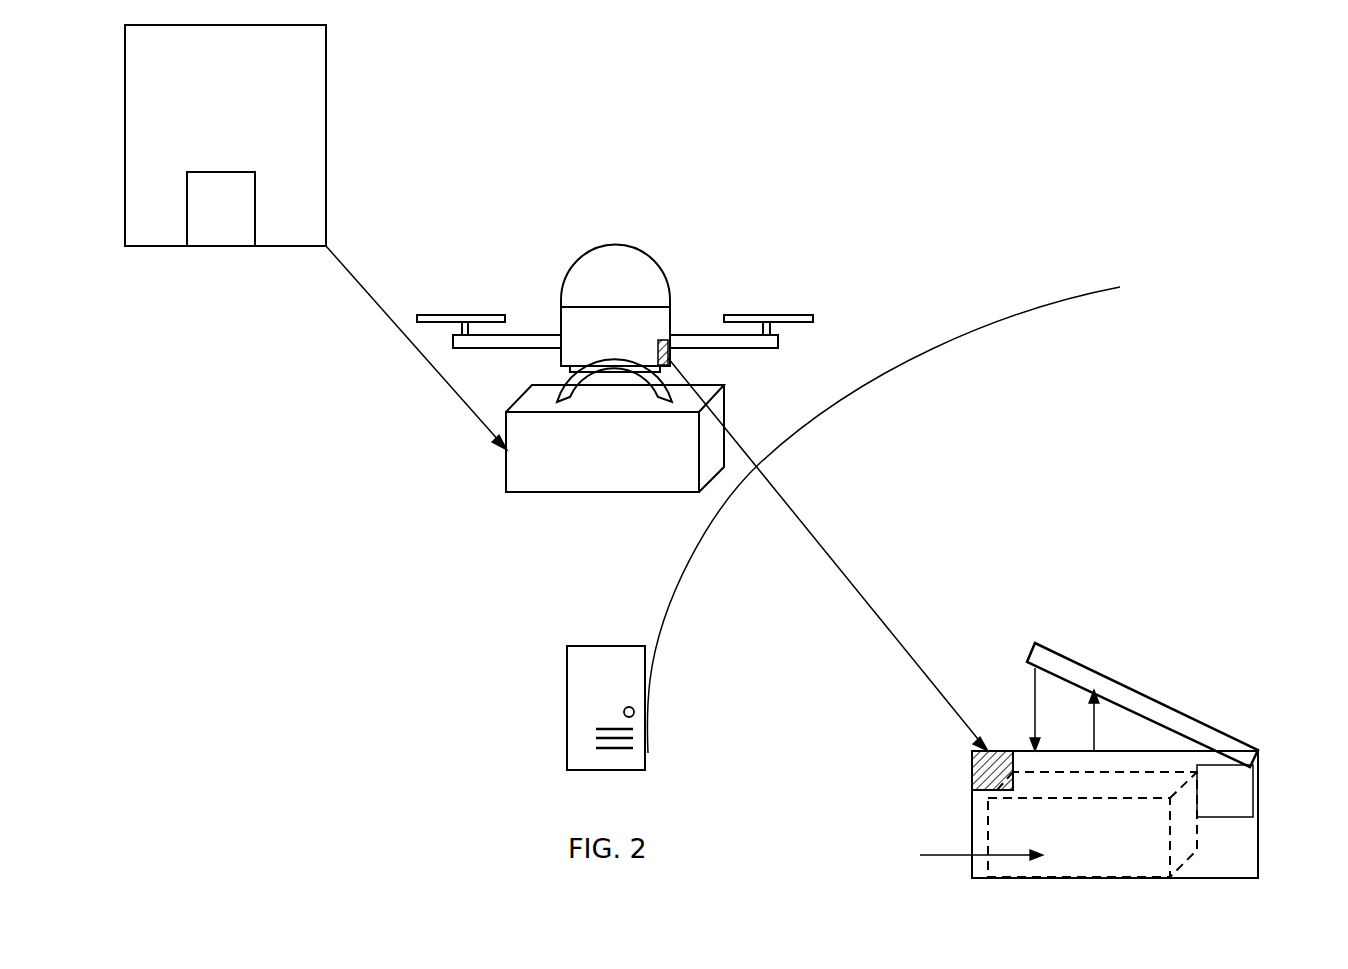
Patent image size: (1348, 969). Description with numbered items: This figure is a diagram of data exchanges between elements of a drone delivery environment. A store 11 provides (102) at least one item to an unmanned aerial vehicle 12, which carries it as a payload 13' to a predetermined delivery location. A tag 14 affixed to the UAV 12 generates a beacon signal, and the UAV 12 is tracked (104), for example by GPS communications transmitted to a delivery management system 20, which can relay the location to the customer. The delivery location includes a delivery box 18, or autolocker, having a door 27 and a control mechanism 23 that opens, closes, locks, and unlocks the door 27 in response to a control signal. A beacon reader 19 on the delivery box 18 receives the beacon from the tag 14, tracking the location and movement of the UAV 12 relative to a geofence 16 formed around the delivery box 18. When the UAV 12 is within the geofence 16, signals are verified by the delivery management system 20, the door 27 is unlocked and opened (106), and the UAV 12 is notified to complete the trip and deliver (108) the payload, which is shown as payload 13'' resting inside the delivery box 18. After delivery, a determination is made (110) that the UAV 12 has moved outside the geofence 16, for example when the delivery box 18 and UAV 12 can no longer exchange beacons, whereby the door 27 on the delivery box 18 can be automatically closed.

The store 11 is at (206, 137).
The item provision step 102 is at (360, 280).
The unmanned aerial vehicle 12 is at (732, 348).
The tag 14 is at (670, 343).
The payload 13' is at (615, 460).
The UAV tracking step 104 is at (807, 528).
The geofence region 16 is at (998, 315).
The delivery management system 20 is at (584, 694).
The delivery box 18 is at (1260, 823).
The door 27 is at (1160, 700).
The determination step 110 is at (1012, 709).
The lid opening motion 106 is at (1117, 720).
The beacon reader 19 is at (972, 762).
The control mechanism 23 is at (1225, 791).
The delivery step 108 is at (1030, 824).
The payload 13'' is at (1267, 868).